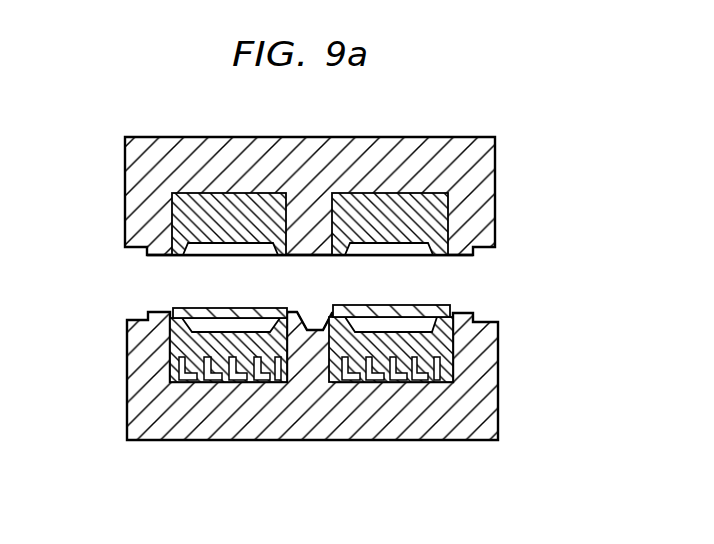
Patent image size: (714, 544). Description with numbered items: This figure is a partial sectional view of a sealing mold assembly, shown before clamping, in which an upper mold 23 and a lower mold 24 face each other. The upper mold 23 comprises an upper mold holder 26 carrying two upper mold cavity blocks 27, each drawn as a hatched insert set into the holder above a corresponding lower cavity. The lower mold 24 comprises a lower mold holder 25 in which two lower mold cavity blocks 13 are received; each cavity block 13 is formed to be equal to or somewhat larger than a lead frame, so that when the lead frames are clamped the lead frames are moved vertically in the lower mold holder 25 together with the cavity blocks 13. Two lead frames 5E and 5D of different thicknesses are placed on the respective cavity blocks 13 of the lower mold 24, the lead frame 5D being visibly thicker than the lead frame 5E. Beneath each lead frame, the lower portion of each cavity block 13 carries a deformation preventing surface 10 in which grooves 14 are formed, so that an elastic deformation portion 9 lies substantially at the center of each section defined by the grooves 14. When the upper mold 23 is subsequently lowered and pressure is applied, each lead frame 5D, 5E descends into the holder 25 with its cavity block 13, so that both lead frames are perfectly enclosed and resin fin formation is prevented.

The upper mold 23 is at (301, 177).
The upper mold holder 26 is at (492, 167).
The upper mold cavity block 27 is at (238, 200).
The lower mold 24 is at (295, 382).
The lower mold holder 25 is at (483, 398).
The lower mold cavity block 13 is at (443, 344).
The lead frame 5E is at (200, 311).
The lead frame 5D is at (433, 311).
The elastic deformation portion 9 is at (195, 376).
The grooves 14 is at (230, 372).
The deformation preventing surface 10 is at (243, 372).